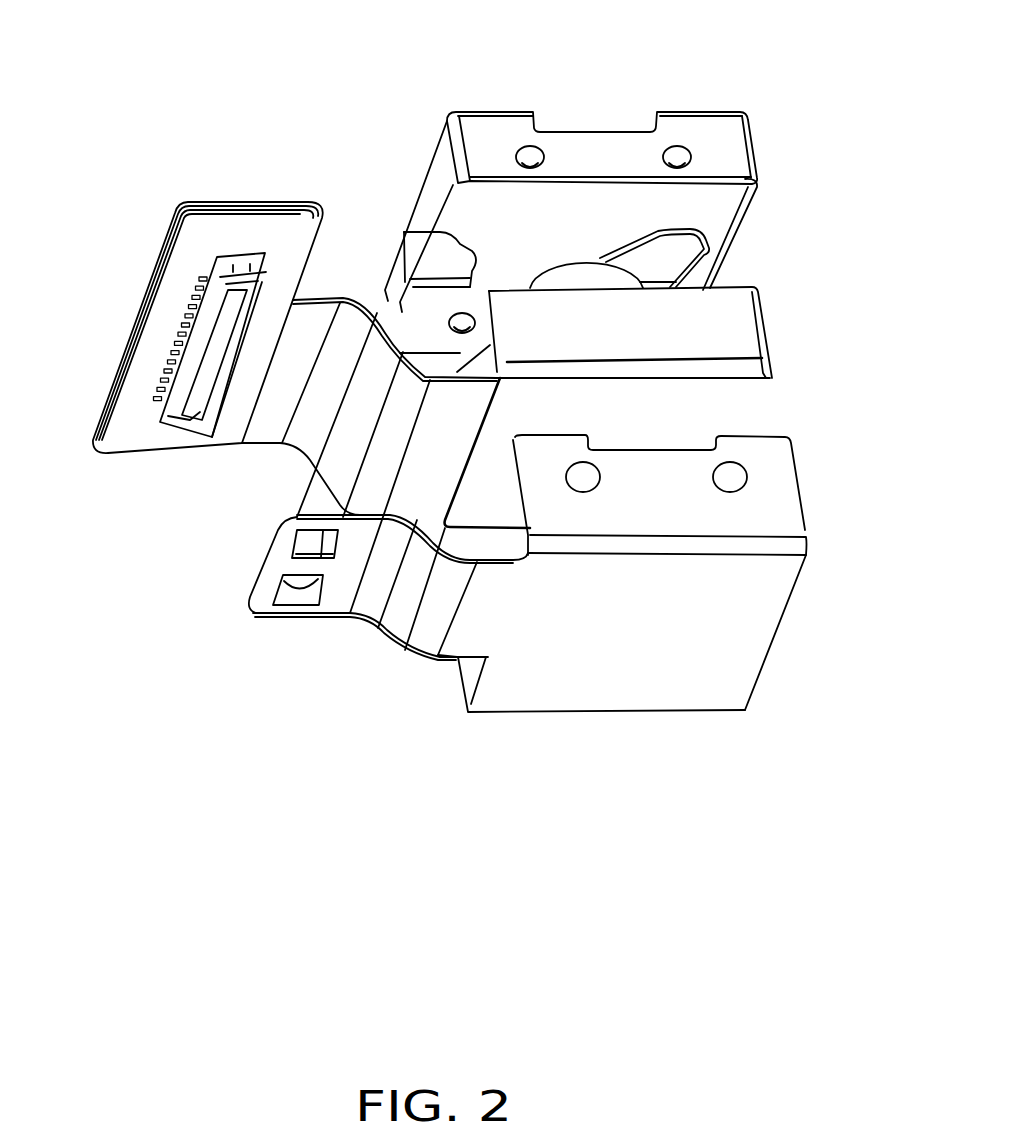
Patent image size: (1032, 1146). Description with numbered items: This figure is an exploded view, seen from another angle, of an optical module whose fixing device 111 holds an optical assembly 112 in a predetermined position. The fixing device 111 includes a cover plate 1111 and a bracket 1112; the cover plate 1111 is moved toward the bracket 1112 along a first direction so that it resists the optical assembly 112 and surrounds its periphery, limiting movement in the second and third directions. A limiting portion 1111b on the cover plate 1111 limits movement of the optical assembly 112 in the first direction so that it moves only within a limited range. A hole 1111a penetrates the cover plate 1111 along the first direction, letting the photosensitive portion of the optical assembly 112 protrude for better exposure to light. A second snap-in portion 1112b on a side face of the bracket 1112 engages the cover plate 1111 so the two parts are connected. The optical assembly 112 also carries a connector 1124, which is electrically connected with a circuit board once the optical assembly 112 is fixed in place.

The fixing device 111 is at (627, 362).
The cover plate 1111 is at (600, 242).
The hole 1111a is at (688, 213).
The limiting portion 1111b is at (442, 263).
The optical assembly 112 is at (740, 329).
The bracket 1112 is at (675, 573).
The second snap-in portion 1112b is at (732, 484).
The connector 1124 is at (165, 308).